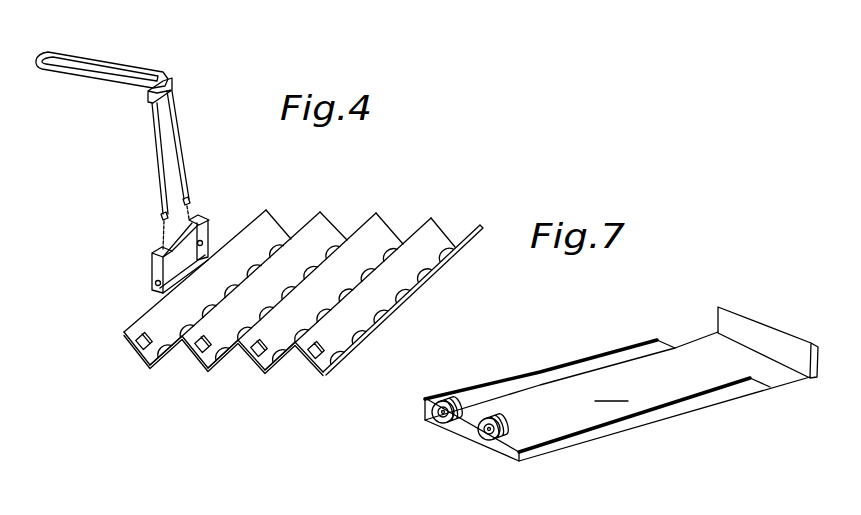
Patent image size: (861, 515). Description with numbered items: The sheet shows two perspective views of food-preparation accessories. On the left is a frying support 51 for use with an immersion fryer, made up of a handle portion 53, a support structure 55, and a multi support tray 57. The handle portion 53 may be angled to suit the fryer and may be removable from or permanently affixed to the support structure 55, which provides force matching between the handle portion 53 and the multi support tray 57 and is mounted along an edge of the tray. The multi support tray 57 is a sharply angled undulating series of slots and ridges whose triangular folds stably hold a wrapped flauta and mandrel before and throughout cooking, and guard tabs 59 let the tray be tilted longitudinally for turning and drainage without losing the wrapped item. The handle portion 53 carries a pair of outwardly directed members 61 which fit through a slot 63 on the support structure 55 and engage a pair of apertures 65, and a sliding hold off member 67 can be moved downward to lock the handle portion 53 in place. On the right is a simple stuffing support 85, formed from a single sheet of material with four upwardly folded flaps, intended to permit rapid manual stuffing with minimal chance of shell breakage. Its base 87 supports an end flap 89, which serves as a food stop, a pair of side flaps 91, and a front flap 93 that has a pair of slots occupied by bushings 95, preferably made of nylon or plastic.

In FIG. 4, the frying support 51 is at (356, 184).
In FIG. 4, the handle portion 53 is at (62, 73).
In FIG. 4, the support structure 55 is at (157, 275).
In FIG. 4, the multi support tray 57 is at (324, 376).
In FIG. 4, the guard tabs 59 is at (190, 352).
In FIG. 4, the outwardly directed members 61 is at (190, 198).
In FIG. 4, the slot 63 is at (180, 230).
In FIG. 4, the apertures 65 is at (203, 242).
In FIG. 4, the sliding hold off member 67 is at (170, 79).
In FIG. 7, the simple stuffing support 85 is at (610, 303).
In FIG. 7, the base 87 is at (617, 396).
In FIG. 7, the end flap 89 is at (760, 340).
In FIG. 7, the side flaps 91 is at (590, 356).
In FIG. 7, the front flap 93 is at (465, 430).
In FIG. 7, the bushings 95 is at (430, 415).